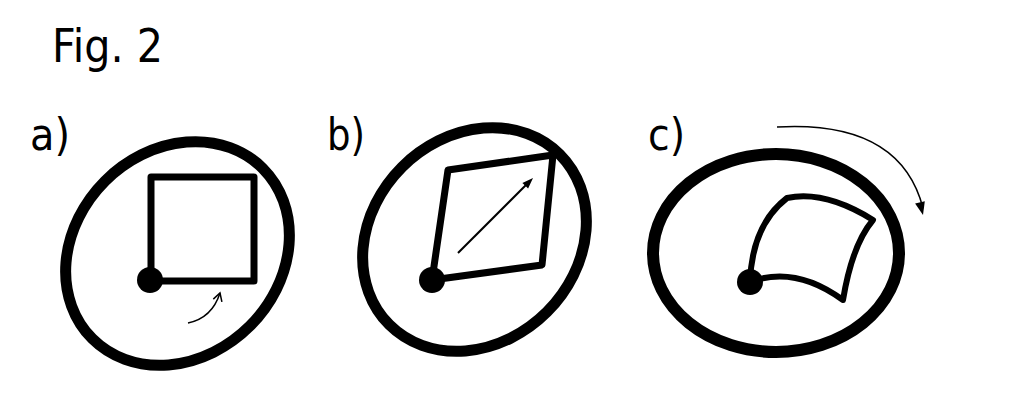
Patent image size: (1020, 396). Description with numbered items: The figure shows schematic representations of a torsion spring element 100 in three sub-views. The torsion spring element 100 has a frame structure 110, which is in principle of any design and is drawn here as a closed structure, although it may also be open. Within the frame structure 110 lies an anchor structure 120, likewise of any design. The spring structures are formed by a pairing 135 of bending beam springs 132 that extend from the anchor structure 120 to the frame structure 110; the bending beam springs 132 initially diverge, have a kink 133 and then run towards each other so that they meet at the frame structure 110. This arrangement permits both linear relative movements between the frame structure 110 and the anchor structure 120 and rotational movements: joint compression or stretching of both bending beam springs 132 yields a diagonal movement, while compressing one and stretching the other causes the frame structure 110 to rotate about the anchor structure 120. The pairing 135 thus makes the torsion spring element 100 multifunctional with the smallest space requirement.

The torsion spring element 100 is at (177, 233).
The frame structure 110 is at (262, 310).
The anchor structure 120 is at (137, 280).
The bending beam spring 132 is at (188, 180).
The kink 133 is at (795, 202).
The pairing of bending beam springs 135 is at (174, 319).